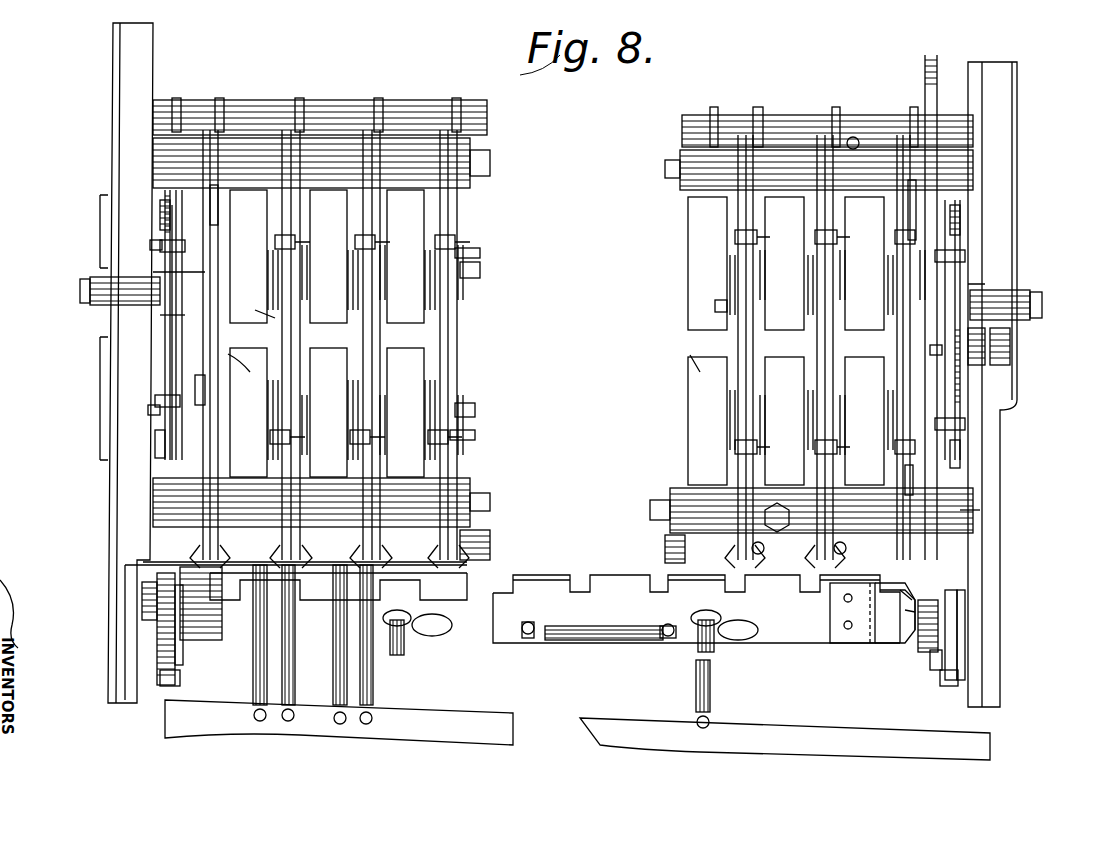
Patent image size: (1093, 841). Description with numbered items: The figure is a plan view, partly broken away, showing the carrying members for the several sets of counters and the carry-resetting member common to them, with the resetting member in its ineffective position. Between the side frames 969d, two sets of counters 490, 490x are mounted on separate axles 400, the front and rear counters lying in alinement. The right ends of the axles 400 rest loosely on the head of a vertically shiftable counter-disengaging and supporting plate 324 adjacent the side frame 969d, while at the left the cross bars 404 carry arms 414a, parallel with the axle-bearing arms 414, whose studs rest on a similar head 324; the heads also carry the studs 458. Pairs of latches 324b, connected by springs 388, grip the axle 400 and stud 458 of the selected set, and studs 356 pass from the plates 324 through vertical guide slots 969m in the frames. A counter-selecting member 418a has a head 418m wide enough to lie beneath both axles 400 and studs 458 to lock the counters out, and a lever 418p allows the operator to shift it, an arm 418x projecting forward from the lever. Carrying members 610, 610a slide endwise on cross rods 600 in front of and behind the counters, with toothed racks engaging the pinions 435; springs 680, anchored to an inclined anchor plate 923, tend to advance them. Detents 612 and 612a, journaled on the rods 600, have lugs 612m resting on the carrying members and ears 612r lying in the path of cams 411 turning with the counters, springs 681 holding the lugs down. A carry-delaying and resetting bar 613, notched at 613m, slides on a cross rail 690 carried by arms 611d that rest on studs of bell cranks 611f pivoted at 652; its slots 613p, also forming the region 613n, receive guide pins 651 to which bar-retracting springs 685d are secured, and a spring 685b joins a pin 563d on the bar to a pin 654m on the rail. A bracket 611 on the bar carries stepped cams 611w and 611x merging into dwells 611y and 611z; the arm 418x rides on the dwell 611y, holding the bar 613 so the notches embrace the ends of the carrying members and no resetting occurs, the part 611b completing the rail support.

The side frame 969d is at (1028, 122).
The cross bar 404 is at (490, 122).
The cross rod 600 is at (492, 163).
The detent 612 is at (385, 135).
The detent 612a is at (460, 490).
The carrying member 610 is at (445, 338).
The carrying member 610a is at (440, 350).
The lateral lug 612m is at (455, 235).
The lateral ear 612r is at (465, 240).
The cam 411 is at (430, 285).
The pinion 435 is at (482, 270).
The axle 400 is at (165, 262).
The arm 414a is at (172, 455).
The latch 324b is at (1023, 442).
The stud 458 is at (150, 245).
The guide slot 969m is at (1023, 270).
The stud 356 is at (90, 293).
The counter-selecting member 418a is at (160, 316).
The counter-disengaging and supporting plate 324 is at (153, 325).
The spring 388 is at (165, 370).
The counter-selecting lever 418p is at (1012, 345).
The head 418m is at (945, 352).
The arm 418x is at (975, 520).
The axle-bearing arm 414 is at (205, 215).
The counter 490x is at (690, 285).
The counter 490 is at (228, 354).
The spring 681 is at (858, 138).
The carry-delaying and resetting bar 613 is at (620, 575).
The notch 613m is at (795, 592).
The lever head 613n is at (690, 625).
The slot 613p is at (430, 636).
The guide pin 651 is at (398, 656).
The spring 680 is at (338, 682).
The anchor plate 923 is at (515, 735).
The spring 685b is at (580, 642).
The bar-retracting spring 685d is at (712, 700).
The pin 563d is at (528, 640).
The pin 654m is at (668, 640).
The bracket 611 is at (830, 635).
The dwell portion 611y is at (895, 630).
The cam 611x is at (905, 650).
The dwell portion 611z is at (918, 655).
The cam 611w is at (905, 592).
The pivot 652 is at (145, 590).
The cross rail 690 is at (180, 612).
The bell crank 611f is at (1026, 660).
The hub 611b is at (945, 688).
The arm 611d is at (185, 645).